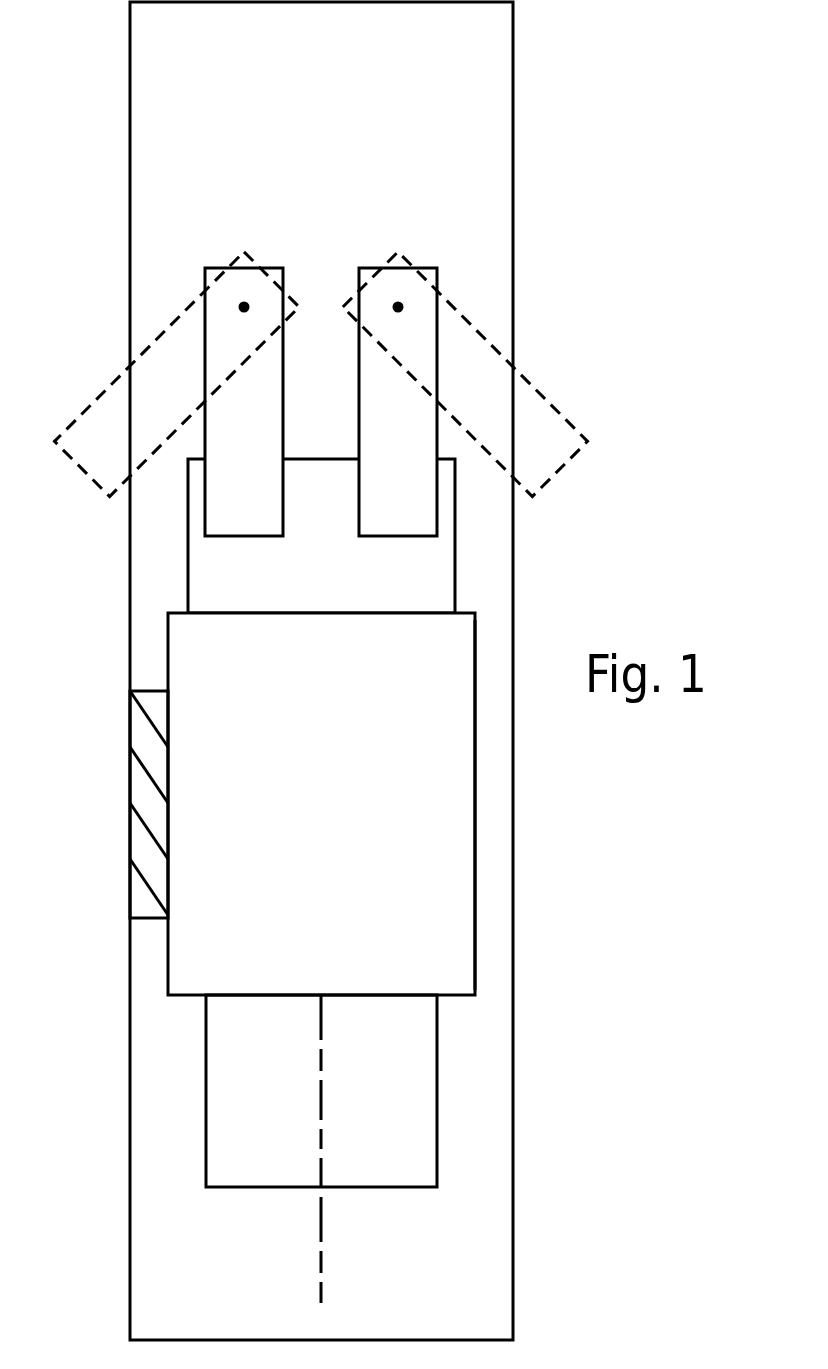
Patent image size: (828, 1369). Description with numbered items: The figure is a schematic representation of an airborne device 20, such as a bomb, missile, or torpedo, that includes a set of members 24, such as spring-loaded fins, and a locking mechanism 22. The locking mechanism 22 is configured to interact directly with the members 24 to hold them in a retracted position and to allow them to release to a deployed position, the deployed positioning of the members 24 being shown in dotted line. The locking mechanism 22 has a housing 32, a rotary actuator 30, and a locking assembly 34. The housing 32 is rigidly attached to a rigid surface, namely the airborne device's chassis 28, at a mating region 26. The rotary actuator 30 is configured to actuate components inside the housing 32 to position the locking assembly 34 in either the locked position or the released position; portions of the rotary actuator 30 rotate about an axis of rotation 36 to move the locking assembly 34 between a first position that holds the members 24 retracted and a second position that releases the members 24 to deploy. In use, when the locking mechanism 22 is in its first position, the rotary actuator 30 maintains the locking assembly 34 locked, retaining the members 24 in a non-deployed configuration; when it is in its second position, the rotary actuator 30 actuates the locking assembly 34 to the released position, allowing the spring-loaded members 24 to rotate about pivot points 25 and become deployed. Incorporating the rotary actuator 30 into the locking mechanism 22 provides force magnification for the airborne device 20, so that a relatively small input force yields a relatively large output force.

The airborne device 20 is at (513, 170).
The locking mechanism 22 is at (475, 878).
The members 24 is at (229, 434).
The pivot points 25 is at (398, 307).
The mating region 26 is at (133, 697).
The chassis 28 is at (305, 152).
The rotary actuator 30 is at (283, 1150).
The housing 32 is at (305, 799).
The locking assembly 34 is at (305, 587).
The axis of rotation 36 is at (322, 1253).